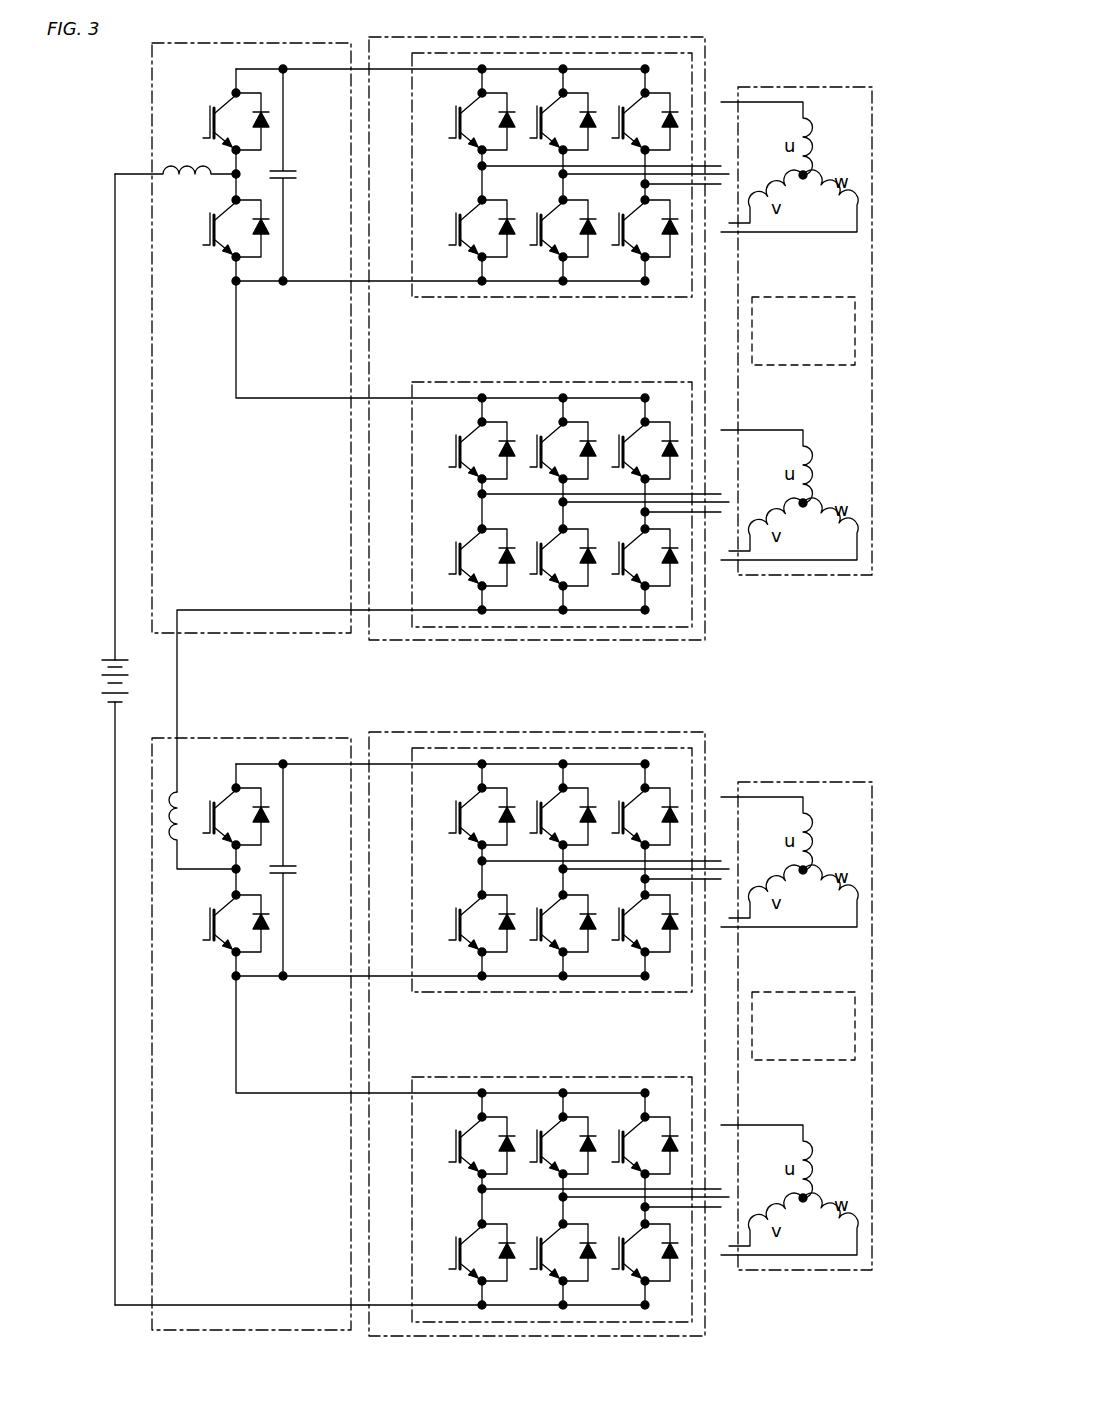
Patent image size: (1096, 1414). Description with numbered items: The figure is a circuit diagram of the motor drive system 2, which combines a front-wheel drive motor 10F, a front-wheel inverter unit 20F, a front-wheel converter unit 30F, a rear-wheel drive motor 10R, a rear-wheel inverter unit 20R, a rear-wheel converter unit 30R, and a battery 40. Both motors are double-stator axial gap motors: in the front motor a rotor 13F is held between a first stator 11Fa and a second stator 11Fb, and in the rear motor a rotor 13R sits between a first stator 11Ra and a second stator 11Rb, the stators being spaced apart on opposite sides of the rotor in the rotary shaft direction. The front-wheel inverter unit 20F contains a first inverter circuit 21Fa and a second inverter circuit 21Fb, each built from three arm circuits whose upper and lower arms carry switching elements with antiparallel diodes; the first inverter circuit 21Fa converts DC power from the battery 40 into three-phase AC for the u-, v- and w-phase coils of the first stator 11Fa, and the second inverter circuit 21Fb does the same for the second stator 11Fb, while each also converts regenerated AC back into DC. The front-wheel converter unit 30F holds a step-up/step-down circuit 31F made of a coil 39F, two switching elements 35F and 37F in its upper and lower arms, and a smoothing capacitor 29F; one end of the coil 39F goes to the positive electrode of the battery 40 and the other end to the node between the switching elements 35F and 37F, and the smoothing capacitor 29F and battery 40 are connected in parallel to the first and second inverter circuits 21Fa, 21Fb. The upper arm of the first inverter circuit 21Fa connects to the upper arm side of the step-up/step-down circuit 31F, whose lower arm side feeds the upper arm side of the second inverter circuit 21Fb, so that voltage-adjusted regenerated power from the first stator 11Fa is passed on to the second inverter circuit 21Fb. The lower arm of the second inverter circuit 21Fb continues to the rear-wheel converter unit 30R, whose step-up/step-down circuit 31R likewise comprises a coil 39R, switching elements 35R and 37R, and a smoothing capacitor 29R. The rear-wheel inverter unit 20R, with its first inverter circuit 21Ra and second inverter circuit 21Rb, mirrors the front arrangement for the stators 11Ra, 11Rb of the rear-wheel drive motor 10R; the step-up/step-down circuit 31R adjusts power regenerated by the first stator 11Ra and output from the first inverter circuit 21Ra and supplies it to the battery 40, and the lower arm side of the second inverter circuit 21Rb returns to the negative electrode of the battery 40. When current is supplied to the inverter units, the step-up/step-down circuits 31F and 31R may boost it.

The motor drive system 2 is at (925, 703).
The battery 40 is at (101, 705).
The front-wheel converter unit 30F is at (283, 43).
The step-up/step-down circuit 31F is at (228, 149).
The switching element 35F is at (229, 102).
The switching element 37F is at (229, 259).
The coil 39F is at (181, 165).
The smoothing capacitor 29F is at (290, 165).
The front-wheel inverter unit 20F is at (693, 38).
The first inverter circuit 21Fa is at (447, 299).
The second inverter circuit 21Fb is at (428, 382).
The front-wheel drive motor 10F is at (820, 87).
The first stator 11Fa is at (812, 154).
The second stator 11Fb is at (812, 482).
The rotor 13F is at (803, 331).
The rear-wheel converter unit 30R is at (283, 738).
The step-up/step-down circuit 31R is at (228, 844).
The switching element 35R is at (229, 797).
The switching element 37R is at (229, 954).
The coil 39R is at (180, 838).
The smoothing capacitor 29R is at (290, 860).
The rear-wheel inverter unit 20R is at (693, 733).
The first inverter circuit 21Ra is at (447, 994).
The second inverter circuit 21Rb is at (428, 1077).
The rear-wheel drive motor 10R is at (820, 782).
The first stator 11Ra is at (812, 849).
The second stator 11Rb is at (812, 1177).
The rotor 13R is at (803, 1026).